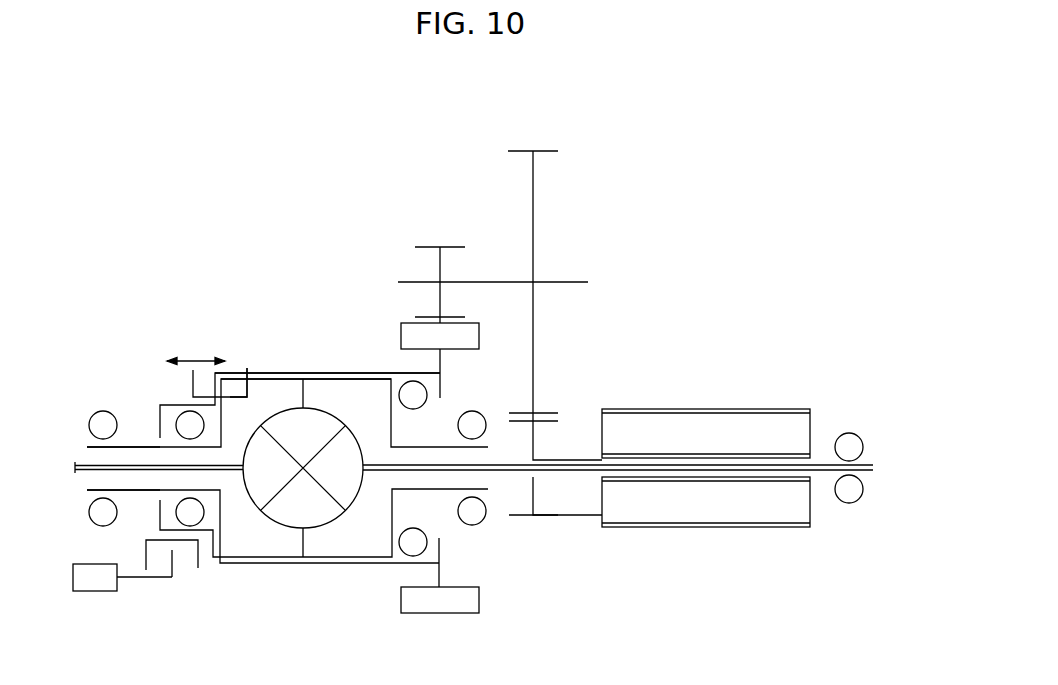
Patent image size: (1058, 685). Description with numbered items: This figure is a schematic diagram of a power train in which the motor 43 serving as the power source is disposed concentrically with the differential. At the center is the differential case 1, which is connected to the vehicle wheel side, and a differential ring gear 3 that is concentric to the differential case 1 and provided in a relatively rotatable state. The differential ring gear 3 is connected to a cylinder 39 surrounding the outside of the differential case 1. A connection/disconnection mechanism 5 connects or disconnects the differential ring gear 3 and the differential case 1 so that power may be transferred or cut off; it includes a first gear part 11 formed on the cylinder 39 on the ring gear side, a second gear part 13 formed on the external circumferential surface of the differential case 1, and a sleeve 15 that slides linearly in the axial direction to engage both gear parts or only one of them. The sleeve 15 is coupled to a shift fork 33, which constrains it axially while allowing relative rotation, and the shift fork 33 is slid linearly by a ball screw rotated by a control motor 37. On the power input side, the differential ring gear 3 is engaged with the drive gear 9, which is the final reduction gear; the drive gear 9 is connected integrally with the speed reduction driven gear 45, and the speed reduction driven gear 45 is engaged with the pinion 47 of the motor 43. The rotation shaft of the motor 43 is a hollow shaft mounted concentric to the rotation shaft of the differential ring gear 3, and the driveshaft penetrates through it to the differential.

The differential case 1 is at (270, 557).
The differential ring gear 3 is at (401, 336).
The connection/disconnection mechanism 5 is at (188, 346).
The drive gear 9 is at (430, 247).
The first gear part 11 is at (238, 370).
The second gear part 13 is at (137, 447).
The sleeve 15 is at (192, 383).
The shift fork 33 is at (197, 560).
The control motor 37 is at (90, 592).
The cylinder 39 is at (283, 373).
The motor 43 is at (742, 410).
The speed reduction driven gear 45 is at (519, 150).
The pinion 47 is at (545, 517).